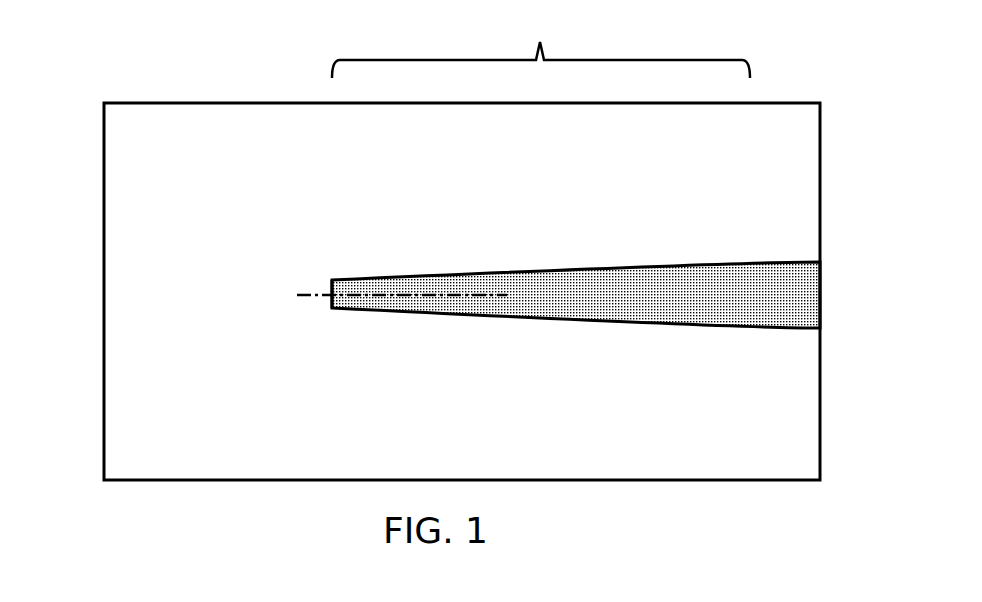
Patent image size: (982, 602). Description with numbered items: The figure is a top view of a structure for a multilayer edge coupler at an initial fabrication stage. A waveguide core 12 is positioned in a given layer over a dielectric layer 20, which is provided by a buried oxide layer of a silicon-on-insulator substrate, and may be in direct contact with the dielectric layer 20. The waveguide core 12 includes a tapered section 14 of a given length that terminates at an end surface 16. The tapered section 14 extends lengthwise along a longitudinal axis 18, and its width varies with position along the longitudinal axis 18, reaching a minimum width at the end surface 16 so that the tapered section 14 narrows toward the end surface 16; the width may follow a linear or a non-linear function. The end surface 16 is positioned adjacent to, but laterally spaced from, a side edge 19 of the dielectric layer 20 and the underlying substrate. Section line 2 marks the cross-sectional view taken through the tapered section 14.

The section line 2- 2 is at (41, 292).
The waveguide core 12 is at (636, 287).
The tapered section 14 is at (541, 45).
The end surface 16 is at (332, 285).
The longitudinal axis 18 is at (437, 293).
The side edge 19 is at (104, 358).
The dielectric layer 20 is at (710, 398).